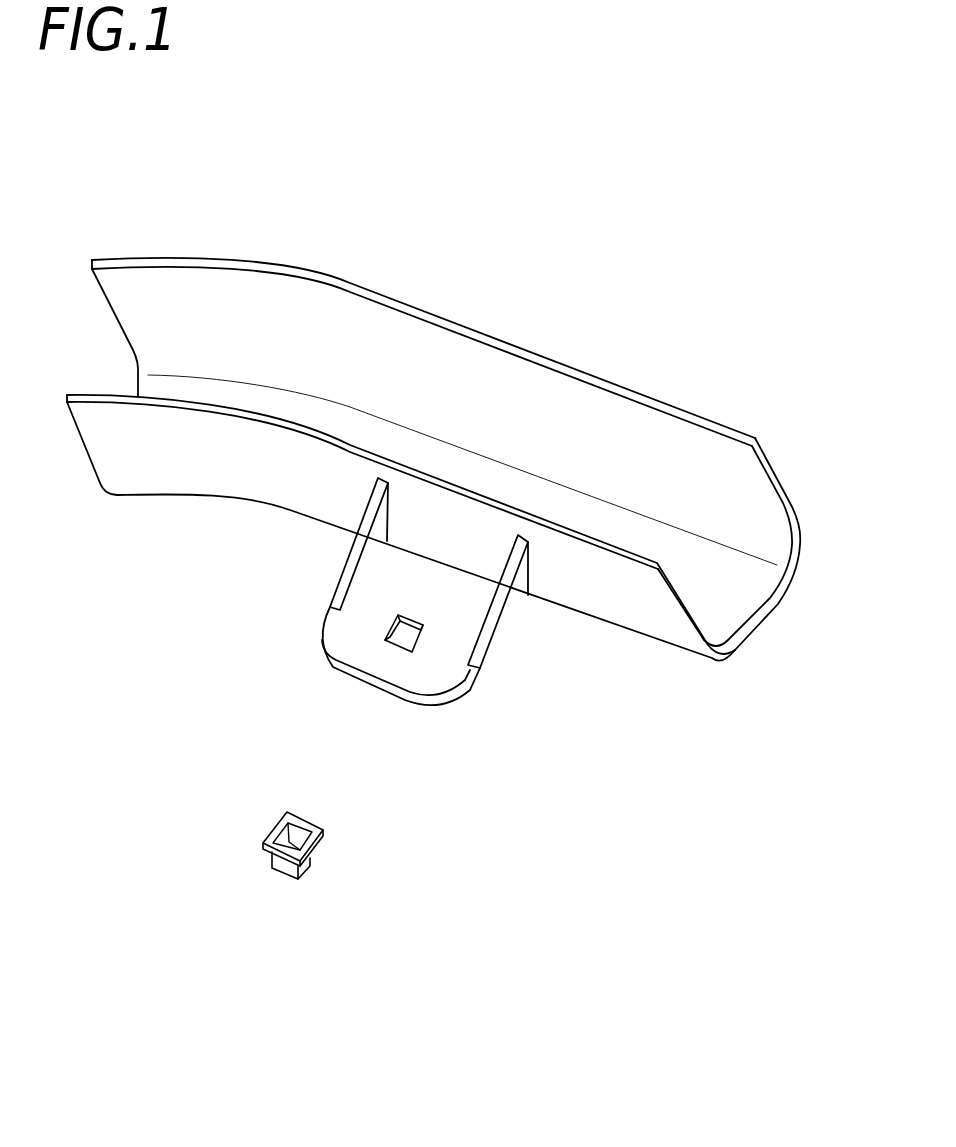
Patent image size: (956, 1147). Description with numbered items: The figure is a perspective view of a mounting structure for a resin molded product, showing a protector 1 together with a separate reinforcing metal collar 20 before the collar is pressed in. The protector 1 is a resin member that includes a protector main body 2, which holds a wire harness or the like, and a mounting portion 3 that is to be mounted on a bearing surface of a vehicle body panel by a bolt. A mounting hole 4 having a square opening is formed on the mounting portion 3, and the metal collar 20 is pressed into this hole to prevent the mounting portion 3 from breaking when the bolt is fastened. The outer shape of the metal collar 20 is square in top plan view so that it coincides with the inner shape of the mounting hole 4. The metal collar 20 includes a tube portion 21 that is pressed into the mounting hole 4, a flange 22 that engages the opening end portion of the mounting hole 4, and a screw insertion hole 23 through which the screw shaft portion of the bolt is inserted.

The protector 1 is at (447, 471).
The protector main body 2 is at (753, 465).
The mounting portion 3 is at (405, 605).
The mounting hole 4 is at (400, 635).
The metal collar 20 is at (297, 862).
The tube portion 21 is at (280, 865).
The flange 22 is at (320, 834).
The screw insertion hole 23 is at (295, 828).